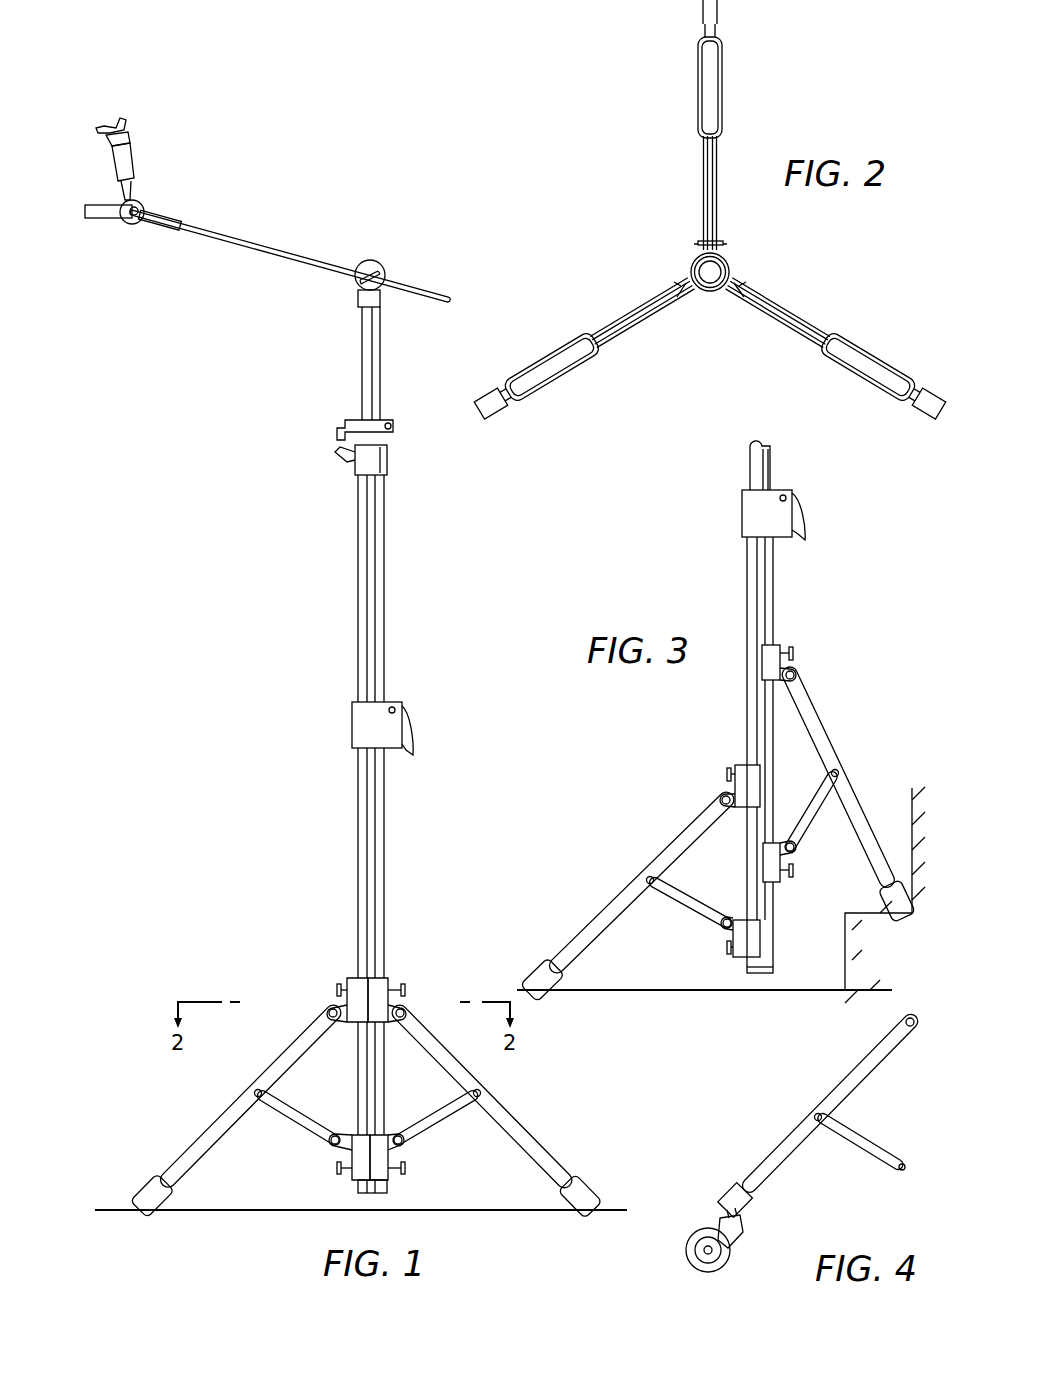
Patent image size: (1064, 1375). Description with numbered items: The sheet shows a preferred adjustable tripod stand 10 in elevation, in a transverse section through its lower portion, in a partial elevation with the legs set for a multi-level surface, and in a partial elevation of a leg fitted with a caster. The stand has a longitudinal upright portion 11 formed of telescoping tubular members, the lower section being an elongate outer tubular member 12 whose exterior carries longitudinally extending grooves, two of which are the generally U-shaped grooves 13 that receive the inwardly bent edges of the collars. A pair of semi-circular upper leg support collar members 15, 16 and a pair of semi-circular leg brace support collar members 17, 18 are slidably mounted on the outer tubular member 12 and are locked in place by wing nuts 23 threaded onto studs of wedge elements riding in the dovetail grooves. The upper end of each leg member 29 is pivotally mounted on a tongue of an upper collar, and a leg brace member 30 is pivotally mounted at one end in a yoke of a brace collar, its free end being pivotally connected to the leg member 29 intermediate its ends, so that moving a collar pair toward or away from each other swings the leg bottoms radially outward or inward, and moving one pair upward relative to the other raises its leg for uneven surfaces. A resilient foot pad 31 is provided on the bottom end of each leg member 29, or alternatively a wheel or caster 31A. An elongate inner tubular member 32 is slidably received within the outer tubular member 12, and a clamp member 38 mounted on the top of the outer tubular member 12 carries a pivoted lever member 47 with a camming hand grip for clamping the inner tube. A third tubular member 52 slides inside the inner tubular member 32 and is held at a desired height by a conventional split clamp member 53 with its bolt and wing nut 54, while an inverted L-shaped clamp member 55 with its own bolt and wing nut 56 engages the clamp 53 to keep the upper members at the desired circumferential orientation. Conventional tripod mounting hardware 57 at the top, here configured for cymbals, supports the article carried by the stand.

In FIG. 1, the adjustable tripod stand 10 is at (294, 782).
In FIG. 2, the adjustable tripod stand 10 is at (637, 167).
In FIG. 1, the longitudinal upright portion 11 is at (386, 844).
In FIG. 2, the longitudinal upright portion 11 is at (730, 268).
In FIG. 3, the longitudinal upright portion 11 is at (776, 602).
In FIG. 1, the outer tubular member 12 is at (357, 853).
In FIG. 2, the outer tubular member 12 is at (692, 270).
In FIG. 3, the outer tubular member 12 is at (747, 576).
In FIG. 1, the grooves 13 is at (370, 883).
In FIG. 3, the grooves 13 is at (757, 605).
In FIG. 1, the upper leg support collar member 15 is at (356, 980).
In FIG. 2, the upper leg support collar member 15 is at (694, 260).
In FIG. 3, the upper leg support collar member 15 is at (748, 768).
In FIG. 1, the upper leg support collar member 16 is at (380, 980).
In FIG. 2, the upper leg support collar member 16 is at (715, 291).
In FIG. 3, the upper leg support collar member 16 is at (780, 648).
In FIG. 1, the leg brace support collar member 17 is at (352, 1134).
In FIG. 3, the leg brace support collar member 17 is at (740, 920).
In FIG. 1, the leg brace support collar member 18 is at (392, 1133).
In FIG. 3, the leg brace support collar member 18 is at (776, 882).
In FIG. 1, the wing nuts 23 is at (337, 990).
In FIG. 3, the wing nuts 23 is at (793, 653).
In FIG. 1, the leg member 29 is at (262, 1076).
In FIG. 2, the leg member 29 is at (723, 111).
In FIG. 3, the leg member 29 is at (660, 854).
In FIG. 4, the leg member 29 is at (786, 1140).
In FIG. 1, the leg brace member 30 is at (294, 1121).
In FIG. 3, the leg brace member 30 is at (682, 906).
In FIG. 4, the leg brace member 30 is at (864, 1134).
In FIG. 1, the foot pad 31 is at (146, 1180).
In FIG. 2, the foot pad 31 is at (718, 16).
In FIG. 3, the foot pad 31 is at (538, 962).
In FIG. 4, the caster 31A is at (702, 1230).
In FIG. 1, the inner tubular member 32 is at (376, 627).
In FIG. 2, the inner tubular member 32 is at (708, 288).
In FIG. 3, the inner tubular member 32 is at (770, 476).
In FIG. 1, the clamp member 38 is at (355, 722).
In FIG. 3, the clamp member 38 is at (745, 516).
In FIG. 1, the lever member 47 is at (414, 738).
In FIG. 3, the lever member 47 is at (806, 534).
In FIG. 1, the third tubular member 52 is at (362, 328).
In FIG. 1, the split clamp member 53 is at (387, 470).
In FIG. 1, the bolt and wing nut 54 is at (340, 460).
In FIG. 1, the inverted L-shaped clamp member 55 is at (368, 420).
In FIG. 1, the bolt and wing nut 56 is at (391, 430).
In FIG. 1, the tripod mounting hardware 57 is at (287, 228).